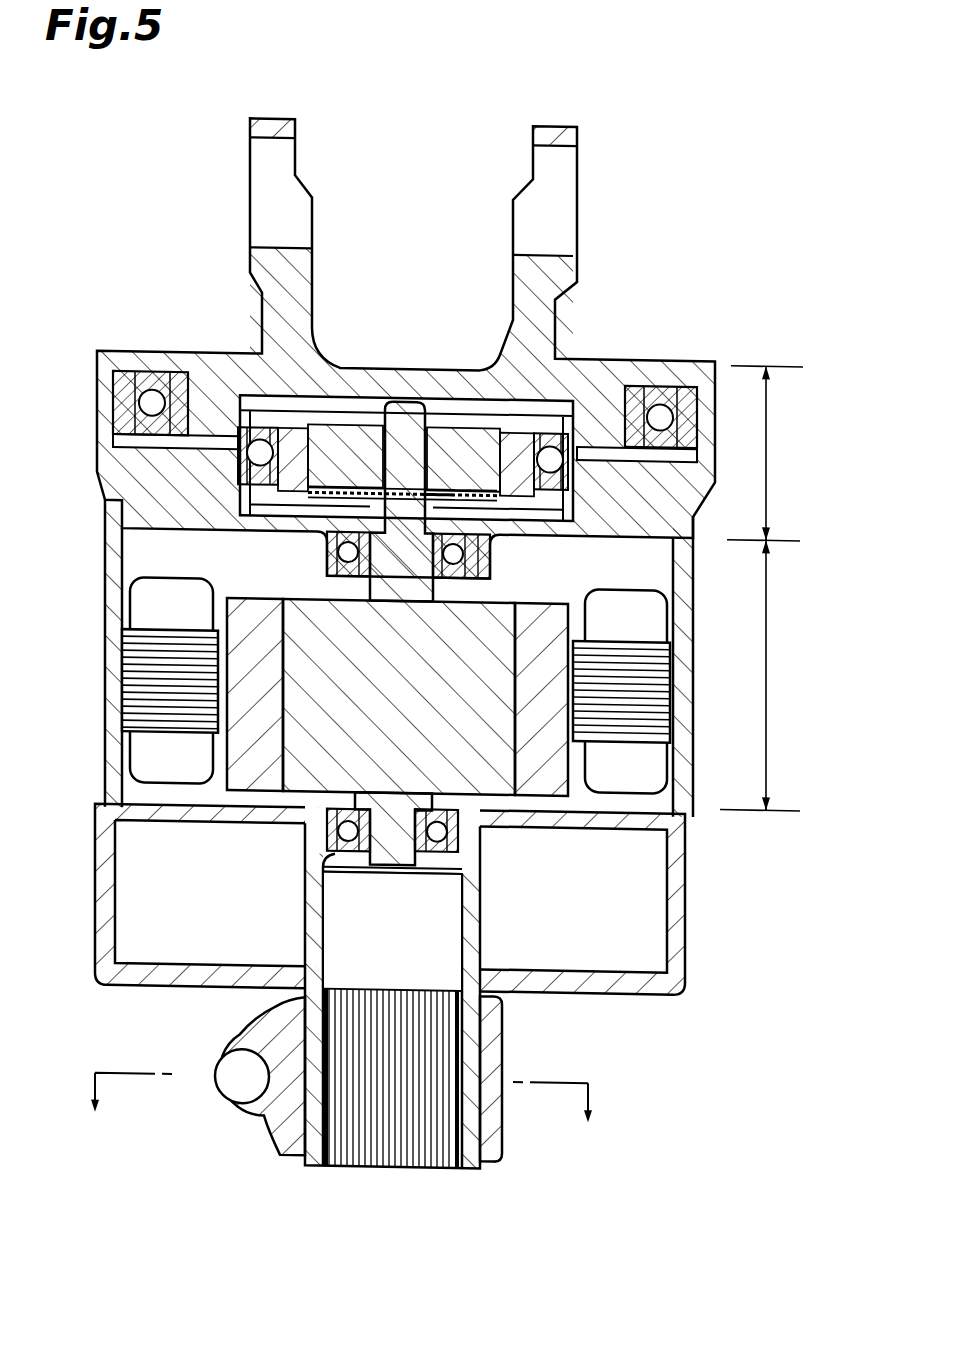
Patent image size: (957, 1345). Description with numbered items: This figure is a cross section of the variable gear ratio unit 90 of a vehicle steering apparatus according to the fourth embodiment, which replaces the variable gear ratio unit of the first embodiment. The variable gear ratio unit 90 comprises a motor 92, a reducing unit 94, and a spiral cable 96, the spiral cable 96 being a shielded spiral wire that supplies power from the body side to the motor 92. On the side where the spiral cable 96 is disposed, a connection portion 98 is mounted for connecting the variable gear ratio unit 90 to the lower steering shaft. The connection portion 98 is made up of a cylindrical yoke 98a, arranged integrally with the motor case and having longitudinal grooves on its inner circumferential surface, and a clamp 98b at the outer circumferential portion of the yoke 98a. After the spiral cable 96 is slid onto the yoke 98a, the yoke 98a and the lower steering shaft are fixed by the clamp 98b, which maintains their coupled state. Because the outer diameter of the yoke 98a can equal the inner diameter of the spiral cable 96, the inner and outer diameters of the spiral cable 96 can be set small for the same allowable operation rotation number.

The variable gear ratio unit 90 is at (714, 155).
The motor 92 is at (766, 595).
The reducing unit 94 is at (766, 399).
The spiral cable 96 is at (687, 908).
The connection portion 98 is at (424, 1115).
The cylindrical yoke 98a is at (467, 1160).
The clamp 98b is at (268, 1135).